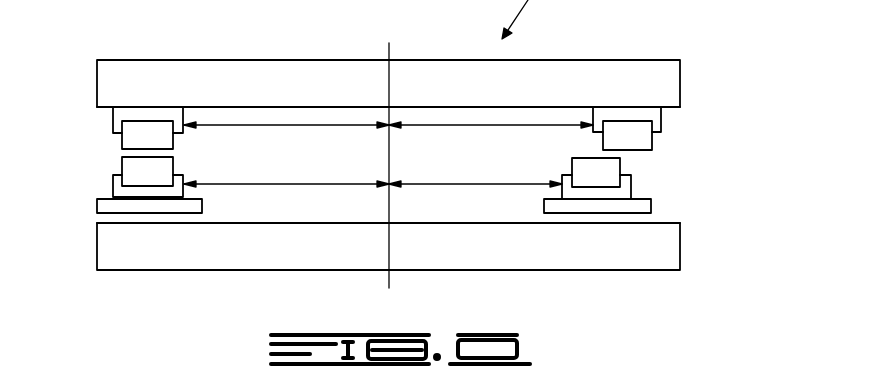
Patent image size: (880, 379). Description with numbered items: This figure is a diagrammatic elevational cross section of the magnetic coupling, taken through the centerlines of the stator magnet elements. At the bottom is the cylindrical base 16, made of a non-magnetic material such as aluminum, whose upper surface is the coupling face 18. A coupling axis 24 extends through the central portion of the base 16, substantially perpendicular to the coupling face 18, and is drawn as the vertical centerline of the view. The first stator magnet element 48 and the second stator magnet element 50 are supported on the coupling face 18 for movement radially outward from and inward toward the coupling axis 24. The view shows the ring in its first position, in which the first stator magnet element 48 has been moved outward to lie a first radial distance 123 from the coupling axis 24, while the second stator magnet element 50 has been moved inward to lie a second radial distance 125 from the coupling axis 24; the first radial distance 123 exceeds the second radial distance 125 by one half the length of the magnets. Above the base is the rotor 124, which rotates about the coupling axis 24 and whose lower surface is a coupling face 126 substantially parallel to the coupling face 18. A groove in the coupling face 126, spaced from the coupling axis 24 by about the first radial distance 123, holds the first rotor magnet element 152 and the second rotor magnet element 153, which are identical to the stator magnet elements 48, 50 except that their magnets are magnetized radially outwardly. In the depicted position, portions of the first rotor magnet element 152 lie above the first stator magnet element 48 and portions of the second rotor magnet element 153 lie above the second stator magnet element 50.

The base 16 is at (670, 250).
The coupling face 18 is at (433, 222).
The coupling axis 24 is at (392, 48).
The first stator magnet element 48 is at (113, 183).
The second stator magnet element 50 is at (631, 183).
The first radial distance 123 is at (492, 126).
The rotor 124 is at (567, 72).
The second radial distance 125 is at (492, 183).
The coupling face 126 is at (224, 110).
The first rotor magnet element 152 is at (112, 116).
The second rotor magnet element 153 is at (661, 119).